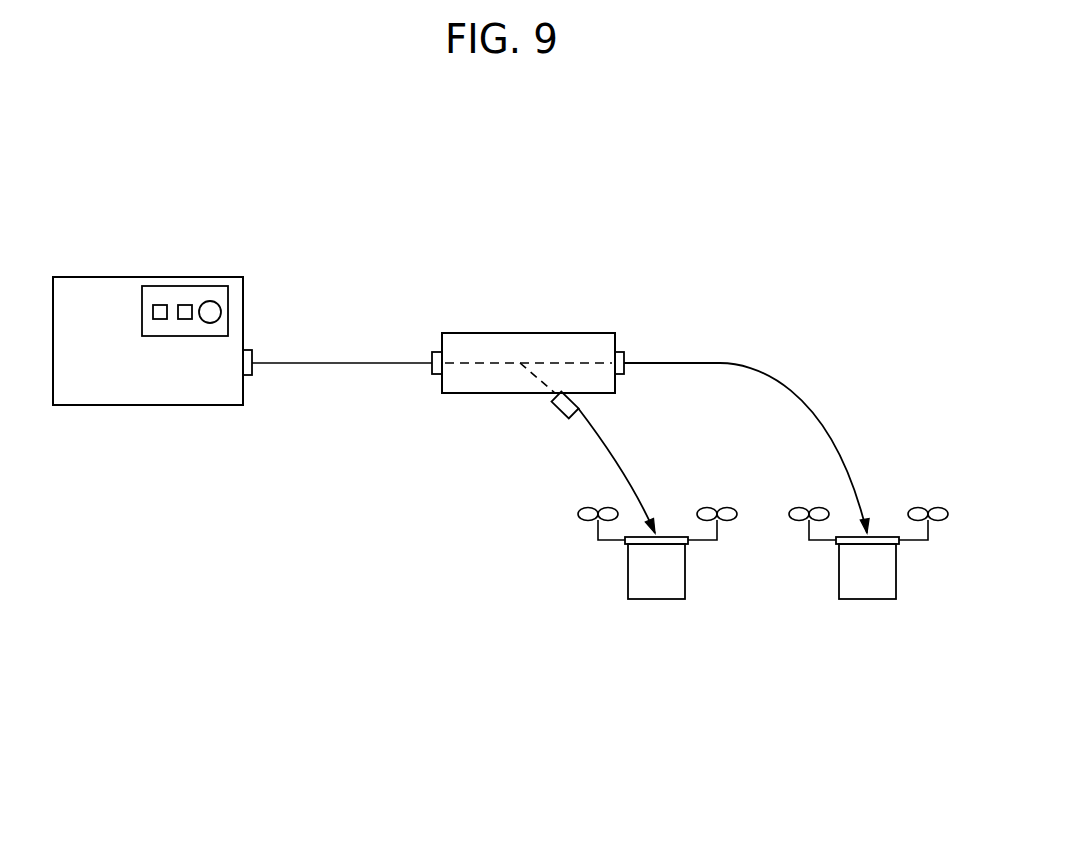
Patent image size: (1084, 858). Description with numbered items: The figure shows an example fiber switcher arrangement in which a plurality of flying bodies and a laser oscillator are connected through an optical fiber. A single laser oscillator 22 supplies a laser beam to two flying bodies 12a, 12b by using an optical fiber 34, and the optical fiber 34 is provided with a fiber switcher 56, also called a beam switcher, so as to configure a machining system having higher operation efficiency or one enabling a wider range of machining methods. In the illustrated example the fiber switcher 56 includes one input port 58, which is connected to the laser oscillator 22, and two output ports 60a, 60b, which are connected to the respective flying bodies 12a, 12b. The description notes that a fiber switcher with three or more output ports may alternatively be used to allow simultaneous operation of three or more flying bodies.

The laser oscillator 22 is at (100, 406).
The optical fiber 34 is at (320, 364).
The fiber switcher 56 is at (520, 275).
The input port 58 is at (437, 346).
The output port 60a is at (561, 412).
The output port 60b is at (620, 346).
The flying body 12a is at (658, 644).
The flying body 12b is at (868, 644).